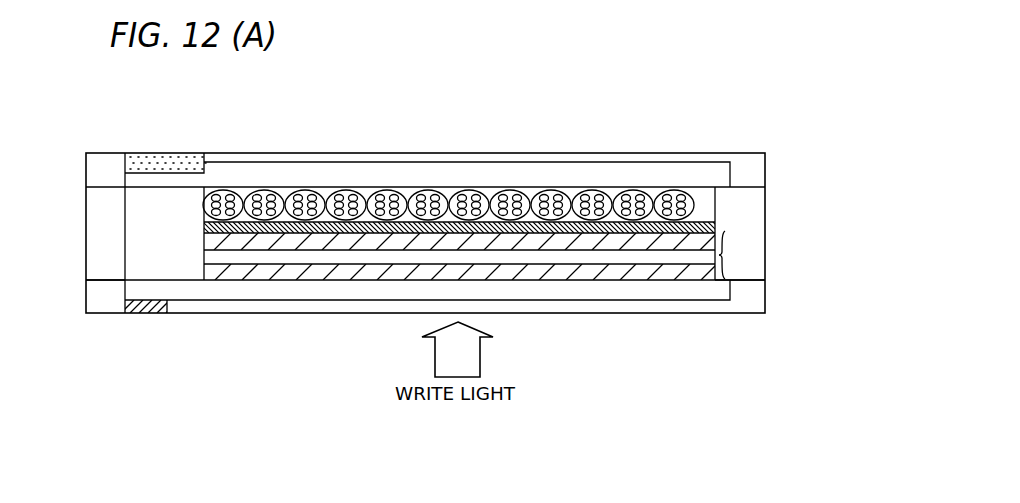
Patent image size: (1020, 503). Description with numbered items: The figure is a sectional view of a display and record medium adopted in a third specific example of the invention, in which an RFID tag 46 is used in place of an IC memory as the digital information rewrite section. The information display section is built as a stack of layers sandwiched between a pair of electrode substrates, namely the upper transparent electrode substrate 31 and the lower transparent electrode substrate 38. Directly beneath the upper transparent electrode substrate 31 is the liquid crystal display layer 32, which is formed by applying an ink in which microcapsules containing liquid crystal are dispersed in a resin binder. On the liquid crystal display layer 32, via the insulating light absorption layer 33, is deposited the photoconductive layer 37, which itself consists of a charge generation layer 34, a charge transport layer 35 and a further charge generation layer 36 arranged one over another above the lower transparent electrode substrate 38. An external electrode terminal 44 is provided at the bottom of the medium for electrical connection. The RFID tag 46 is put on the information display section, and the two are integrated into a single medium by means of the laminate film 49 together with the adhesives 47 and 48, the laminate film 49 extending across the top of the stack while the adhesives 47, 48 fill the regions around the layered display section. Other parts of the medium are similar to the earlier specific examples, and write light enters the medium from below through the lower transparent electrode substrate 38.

The upper transparent electrode substrate 31 is at (670, 165).
The liquid crystal display layer 32 is at (715, 197).
The light absorption layer 33 is at (718, 226).
The charge generation layer 34 is at (203, 240).
The charge transport layer 35 is at (203, 257).
The charge generation layer 36 is at (203, 272).
The photoconductive layer 37 is at (727, 255).
The lower transparent electrode substrate 38 is at (715, 290).
The external electrode terminal 44 is at (147, 315).
The RFID tag 46 is at (163, 157).
The adhesive 47 is at (97, 210).
The adhesive 48 is at (755, 207).
The laminate film 49 is at (557, 153).